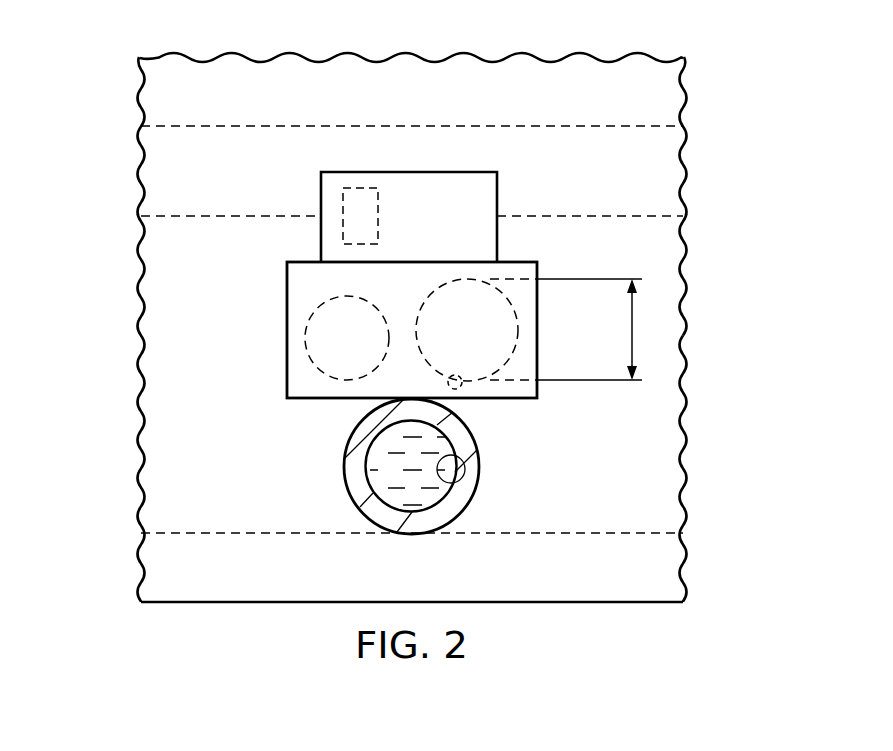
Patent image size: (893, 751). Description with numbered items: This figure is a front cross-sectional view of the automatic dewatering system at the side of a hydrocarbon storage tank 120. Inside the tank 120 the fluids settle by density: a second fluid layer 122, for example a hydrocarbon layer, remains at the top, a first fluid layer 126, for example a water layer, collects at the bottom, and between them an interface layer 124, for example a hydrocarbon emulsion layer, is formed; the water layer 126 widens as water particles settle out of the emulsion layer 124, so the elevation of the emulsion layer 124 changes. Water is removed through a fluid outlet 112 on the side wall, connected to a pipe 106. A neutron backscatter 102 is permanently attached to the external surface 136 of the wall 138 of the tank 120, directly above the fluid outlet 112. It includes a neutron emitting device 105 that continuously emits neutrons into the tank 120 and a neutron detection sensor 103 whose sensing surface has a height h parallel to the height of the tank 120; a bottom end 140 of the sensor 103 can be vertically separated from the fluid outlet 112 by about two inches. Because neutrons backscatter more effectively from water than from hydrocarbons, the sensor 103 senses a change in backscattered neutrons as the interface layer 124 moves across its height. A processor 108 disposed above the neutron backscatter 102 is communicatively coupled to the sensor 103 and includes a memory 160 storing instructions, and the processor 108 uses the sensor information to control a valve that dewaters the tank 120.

The hydrocarbon storage tank 120 is at (690, 92).
The second fluid layer 122 is at (137, 92).
The interface layer 124 is at (137, 172).
The first fluid layer 126 is at (137, 380).
The external surface 136 is at (683, 380).
The wall 138 is at (683, 172).
The processor 108 is at (330, 193).
The memory 160 is at (379, 218).
The neutron backscatter 102 is at (296, 375).
The neutron emitting device 105 is at (308, 338).
The bottom end 140 is at (454, 378).
The neutron detection sensor 103 is at (519, 328).
The pipe 106 is at (355, 477).
The fluid outlet 112 is at (476, 452).